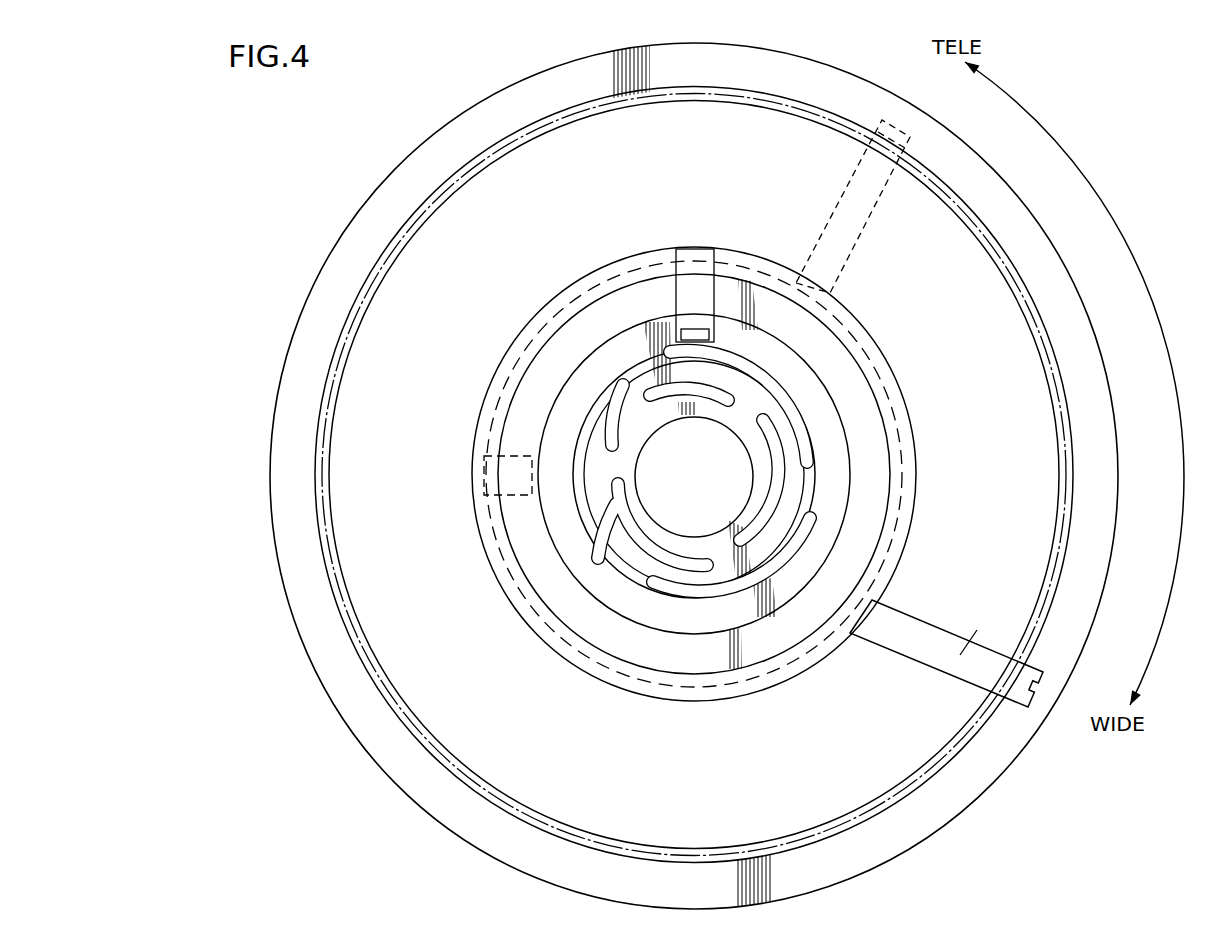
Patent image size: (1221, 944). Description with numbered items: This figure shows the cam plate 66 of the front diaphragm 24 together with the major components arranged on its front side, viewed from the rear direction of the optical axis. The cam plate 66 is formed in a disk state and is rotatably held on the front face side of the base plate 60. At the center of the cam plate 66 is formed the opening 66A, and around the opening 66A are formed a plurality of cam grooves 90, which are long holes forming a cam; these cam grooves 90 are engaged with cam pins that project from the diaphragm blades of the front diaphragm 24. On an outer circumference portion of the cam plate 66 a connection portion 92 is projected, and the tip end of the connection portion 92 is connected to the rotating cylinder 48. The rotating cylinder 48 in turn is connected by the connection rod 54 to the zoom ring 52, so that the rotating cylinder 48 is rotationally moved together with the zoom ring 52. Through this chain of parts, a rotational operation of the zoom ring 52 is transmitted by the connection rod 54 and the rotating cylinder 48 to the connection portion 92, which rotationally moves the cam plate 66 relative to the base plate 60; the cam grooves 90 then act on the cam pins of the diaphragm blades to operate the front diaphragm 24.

The front diaphragm 24 is at (548, 396).
The rotating cylinder 48 is at (596, 272).
The zoom ring 52 is at (833, 94).
The connection rod 54 is at (862, 240).
The base plate 60 is at (818, 354).
The cam plate 66 is at (818, 406).
The opening 66A is at (657, 518).
The cam grooves 90 is at (604, 410).
The connection portion 92 is at (700, 302).